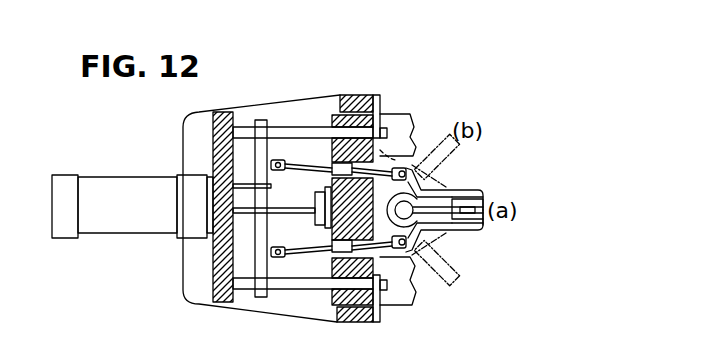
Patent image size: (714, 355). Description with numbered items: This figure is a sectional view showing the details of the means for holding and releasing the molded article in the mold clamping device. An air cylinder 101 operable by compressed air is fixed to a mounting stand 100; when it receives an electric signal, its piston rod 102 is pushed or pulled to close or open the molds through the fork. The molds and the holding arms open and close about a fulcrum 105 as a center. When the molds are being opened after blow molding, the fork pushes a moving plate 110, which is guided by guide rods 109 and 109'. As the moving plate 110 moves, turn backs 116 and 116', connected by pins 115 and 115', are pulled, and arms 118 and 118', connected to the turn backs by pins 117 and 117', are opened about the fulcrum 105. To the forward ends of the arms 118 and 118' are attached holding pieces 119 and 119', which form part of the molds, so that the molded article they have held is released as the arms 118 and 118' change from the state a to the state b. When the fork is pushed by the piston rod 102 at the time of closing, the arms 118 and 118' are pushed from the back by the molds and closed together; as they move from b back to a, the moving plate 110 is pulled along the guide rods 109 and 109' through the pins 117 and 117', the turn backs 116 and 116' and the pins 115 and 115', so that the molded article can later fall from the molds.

The mounting stand 100 is at (216, 118).
The air cylinder 101 is at (118, 190).
The piston rod 102 is at (245, 212).
The fulcrum 105 is at (452, 255).
The guide rod 109 is at (310, 151).
The guide rod 109' is at (310, 306).
The moving plate 110 is at (260, 300).
The pin 115 is at (303, 154).
The pin 115' is at (306, 263).
The turn back 116 is at (333, 180).
The turn back 116' is at (332, 235).
The pin 117 is at (431, 157).
The pin 117' is at (431, 265).
The arm 118 is at (471, 182).
The arm 118' is at (504, 248).
The holding piece 119 is at (512, 185).
The holding piece 119' is at (529, 229).